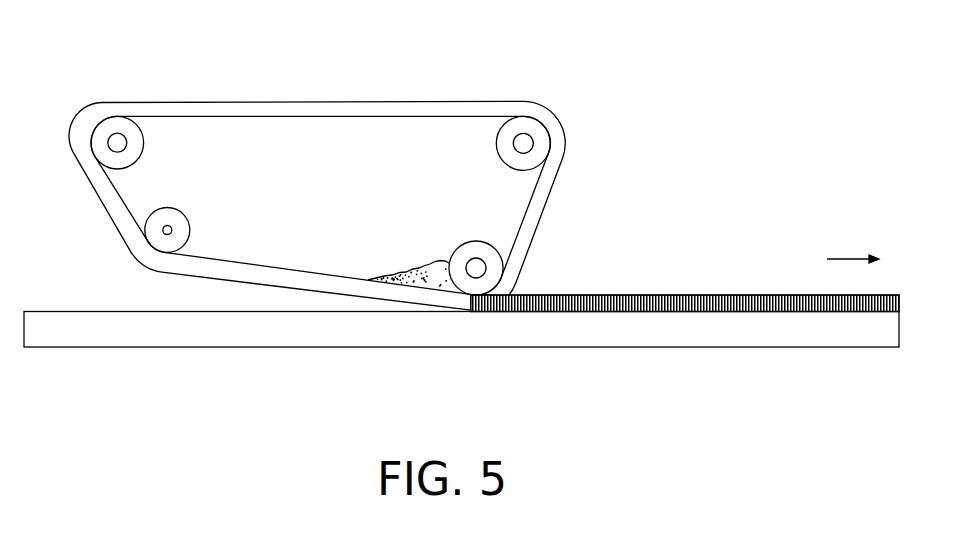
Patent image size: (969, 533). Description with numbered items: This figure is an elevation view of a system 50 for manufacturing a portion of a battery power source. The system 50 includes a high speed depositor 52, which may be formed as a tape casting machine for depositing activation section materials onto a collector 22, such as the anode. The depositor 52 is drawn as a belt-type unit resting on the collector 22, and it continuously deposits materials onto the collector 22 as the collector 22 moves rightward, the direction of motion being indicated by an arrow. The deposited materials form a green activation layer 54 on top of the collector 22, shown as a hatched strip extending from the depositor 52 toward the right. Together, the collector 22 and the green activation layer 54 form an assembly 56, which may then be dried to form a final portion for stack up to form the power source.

The system 50 is at (461, 228).
The high speed depositor 52 is at (525, 87).
The green activation layer 54 is at (590, 300).
The assembly 56 is at (787, 240).
The anode 22 is at (670, 337).